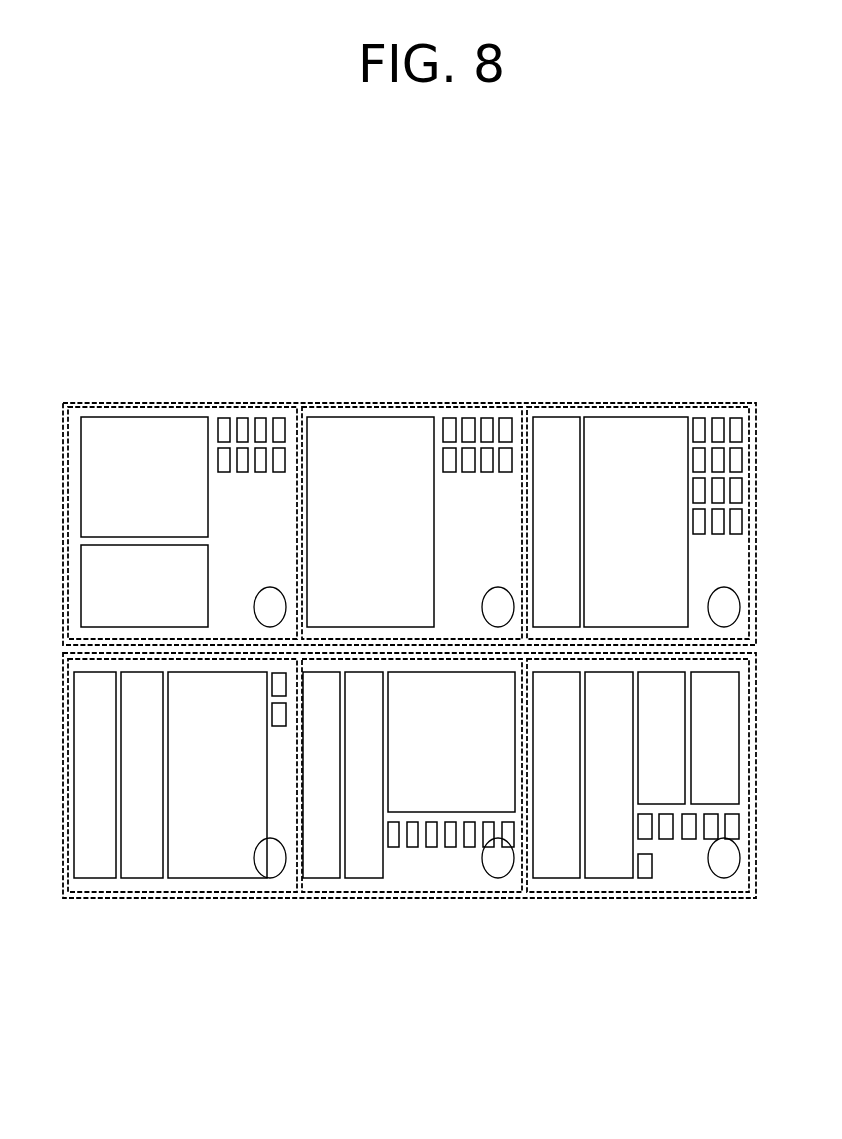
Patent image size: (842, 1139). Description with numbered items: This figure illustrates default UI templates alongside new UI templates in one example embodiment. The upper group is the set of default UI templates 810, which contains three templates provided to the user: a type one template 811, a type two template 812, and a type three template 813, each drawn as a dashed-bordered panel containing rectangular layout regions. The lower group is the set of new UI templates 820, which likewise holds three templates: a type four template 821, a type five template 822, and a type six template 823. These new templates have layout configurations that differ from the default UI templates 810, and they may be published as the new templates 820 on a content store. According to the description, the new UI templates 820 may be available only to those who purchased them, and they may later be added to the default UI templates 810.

The default UI templates 810 is at (89, 403).
The type (1) template 811 is at (176, 407).
The type (2) template 812 is at (402, 407).
The type (3) template 813 is at (627, 407).
The new UI templates 820 is at (89, 898).
The type (4) template 821 is at (176, 892).
The type (5) template 822 is at (402, 892).
The type (6) template 823 is at (627, 892).